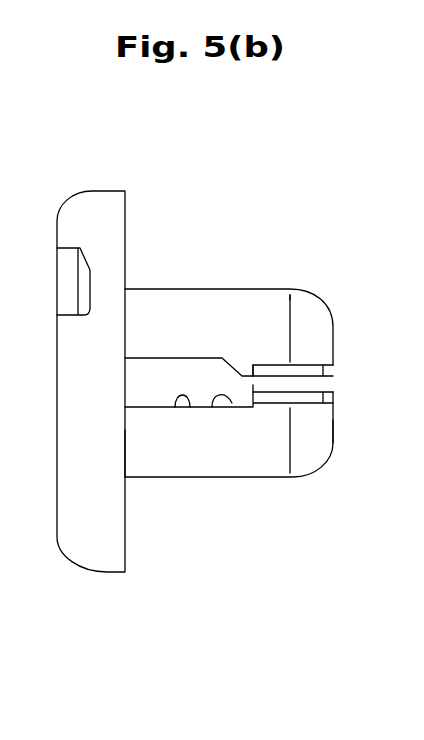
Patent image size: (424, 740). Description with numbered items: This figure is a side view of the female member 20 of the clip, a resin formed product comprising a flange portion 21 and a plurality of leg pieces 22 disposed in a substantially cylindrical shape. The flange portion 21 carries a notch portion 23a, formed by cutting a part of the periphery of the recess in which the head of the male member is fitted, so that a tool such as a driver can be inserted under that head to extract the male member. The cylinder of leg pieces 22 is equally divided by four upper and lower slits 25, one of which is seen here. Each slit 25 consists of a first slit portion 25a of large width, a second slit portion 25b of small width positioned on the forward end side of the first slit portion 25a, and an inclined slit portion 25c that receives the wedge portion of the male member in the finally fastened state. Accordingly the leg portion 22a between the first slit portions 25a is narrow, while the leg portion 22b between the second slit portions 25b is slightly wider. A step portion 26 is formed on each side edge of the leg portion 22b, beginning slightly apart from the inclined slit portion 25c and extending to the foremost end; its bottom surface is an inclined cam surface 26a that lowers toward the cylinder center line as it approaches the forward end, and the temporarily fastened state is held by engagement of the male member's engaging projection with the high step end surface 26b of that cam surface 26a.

The female member 20 is at (223, 113).
The flange portion 21 is at (118, 349).
The leg pieces 22 is at (167, 283).
The leg portion between first slit portions 22a is at (148, 465).
The leg portion between second slit portions 22b is at (300, 457).
The notch portion 23a is at (65, 274).
The upper and lower slit 25 is at (320, 572).
The first slit portion 25a is at (244, 544).
The second slit portion 25b is at (276, 501).
The inclined slit portion 25c is at (252, 250).
The step portion 26 is at (363, 152).
The inclined cam surface 26a is at (258, 366).
The step end surface 26b is at (246, 372).